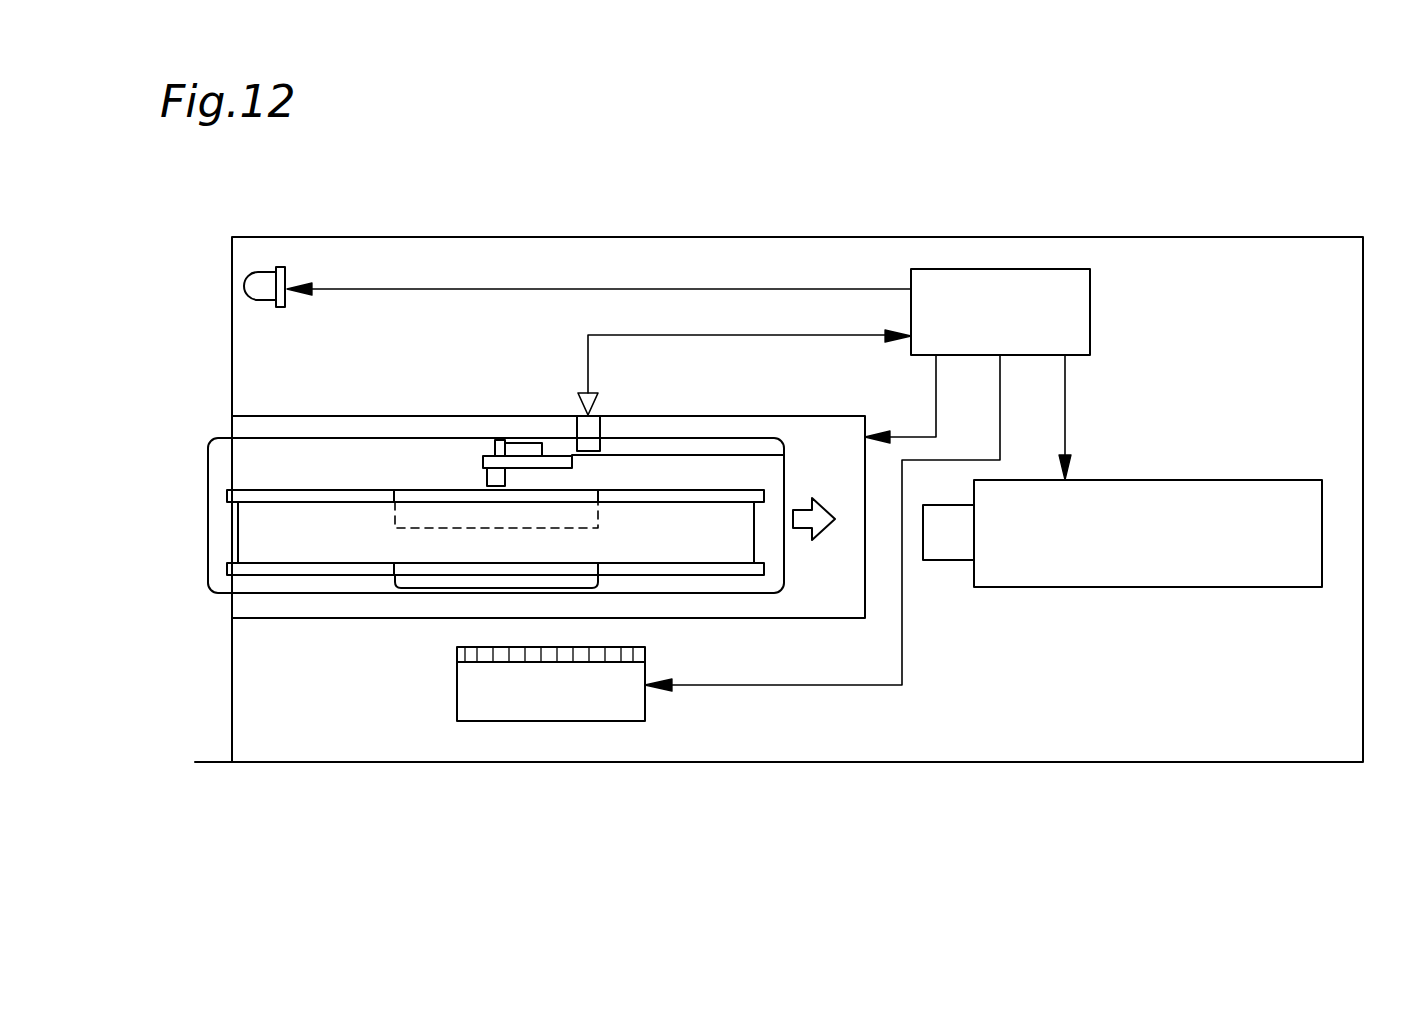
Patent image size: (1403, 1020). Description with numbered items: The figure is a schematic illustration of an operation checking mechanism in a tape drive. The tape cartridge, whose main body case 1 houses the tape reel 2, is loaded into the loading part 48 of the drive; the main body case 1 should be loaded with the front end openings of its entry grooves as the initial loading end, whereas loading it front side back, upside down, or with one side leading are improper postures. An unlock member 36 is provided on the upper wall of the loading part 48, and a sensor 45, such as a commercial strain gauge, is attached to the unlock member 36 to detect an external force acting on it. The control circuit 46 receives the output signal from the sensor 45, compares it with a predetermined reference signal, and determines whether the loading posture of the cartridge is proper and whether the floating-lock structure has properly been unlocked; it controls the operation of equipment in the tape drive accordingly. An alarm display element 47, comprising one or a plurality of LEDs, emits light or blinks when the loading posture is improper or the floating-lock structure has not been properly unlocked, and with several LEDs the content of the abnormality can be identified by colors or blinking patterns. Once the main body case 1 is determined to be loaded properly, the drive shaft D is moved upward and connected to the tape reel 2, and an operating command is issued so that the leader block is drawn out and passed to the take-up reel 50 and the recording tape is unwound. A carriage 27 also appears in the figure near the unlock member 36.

The main body case 1 is at (208, 553).
The tape reel 2 is at (355, 438).
The carriage 27 is at (498, 440).
The unlock member 36 is at (582, 430).
The sensor 45 is at (593, 393).
The control circuit 46 is at (1070, 313).
The alarm display element 47 is at (257, 272).
The loading part 48 is at (265, 417).
The take-up reel 50 is at (1167, 480).
The drive shaft D is at (457, 690).